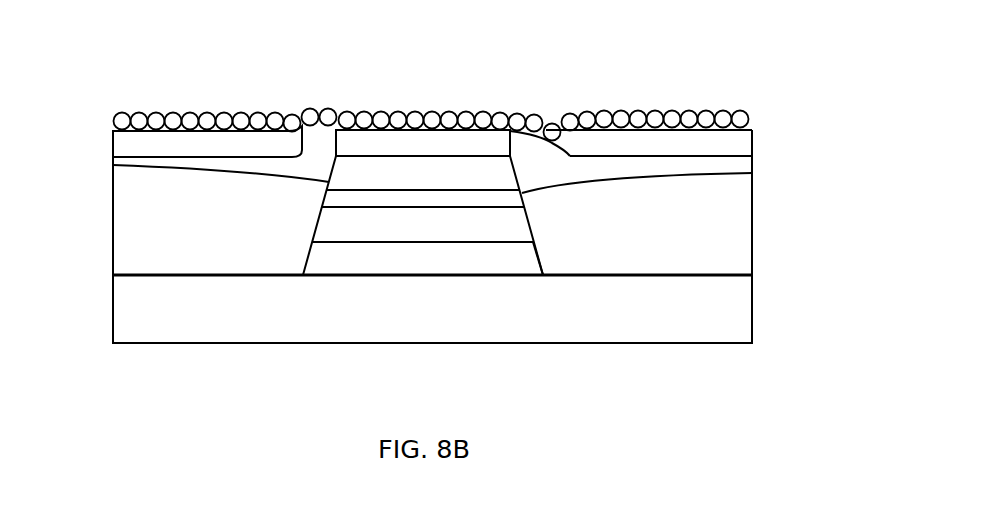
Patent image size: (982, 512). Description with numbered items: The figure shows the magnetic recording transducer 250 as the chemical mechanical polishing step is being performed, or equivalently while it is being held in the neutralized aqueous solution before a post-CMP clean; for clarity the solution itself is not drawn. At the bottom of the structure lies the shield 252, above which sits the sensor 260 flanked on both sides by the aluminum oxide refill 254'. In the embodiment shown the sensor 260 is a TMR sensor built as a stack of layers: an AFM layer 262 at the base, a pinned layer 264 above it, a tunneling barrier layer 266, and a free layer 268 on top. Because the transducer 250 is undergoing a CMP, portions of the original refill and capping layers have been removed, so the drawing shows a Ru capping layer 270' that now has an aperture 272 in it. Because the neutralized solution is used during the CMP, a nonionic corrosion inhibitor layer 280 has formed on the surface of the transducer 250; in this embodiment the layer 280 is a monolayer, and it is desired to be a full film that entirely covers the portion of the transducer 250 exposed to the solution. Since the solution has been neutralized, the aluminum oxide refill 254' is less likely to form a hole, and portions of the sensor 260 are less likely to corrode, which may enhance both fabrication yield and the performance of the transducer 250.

The magnetic recording transducer 250 is at (446, 46).
The shield 252 is at (752, 341).
The aluminum oxide refill 254' is at (432, 216).
The sensor 260 is at (492, 305).
The AFM layer 262 is at (337, 275).
The pinned layer 264 is at (522, 242).
The tunneling barrier layer 266 is at (752, 173).
The free layer 268 is at (113, 165).
The Ru capping layer 270' is at (402, 103).
The aperture 272 is at (556, 100).
The nonionic corrosion inhibitor layer 280 is at (772, 120).